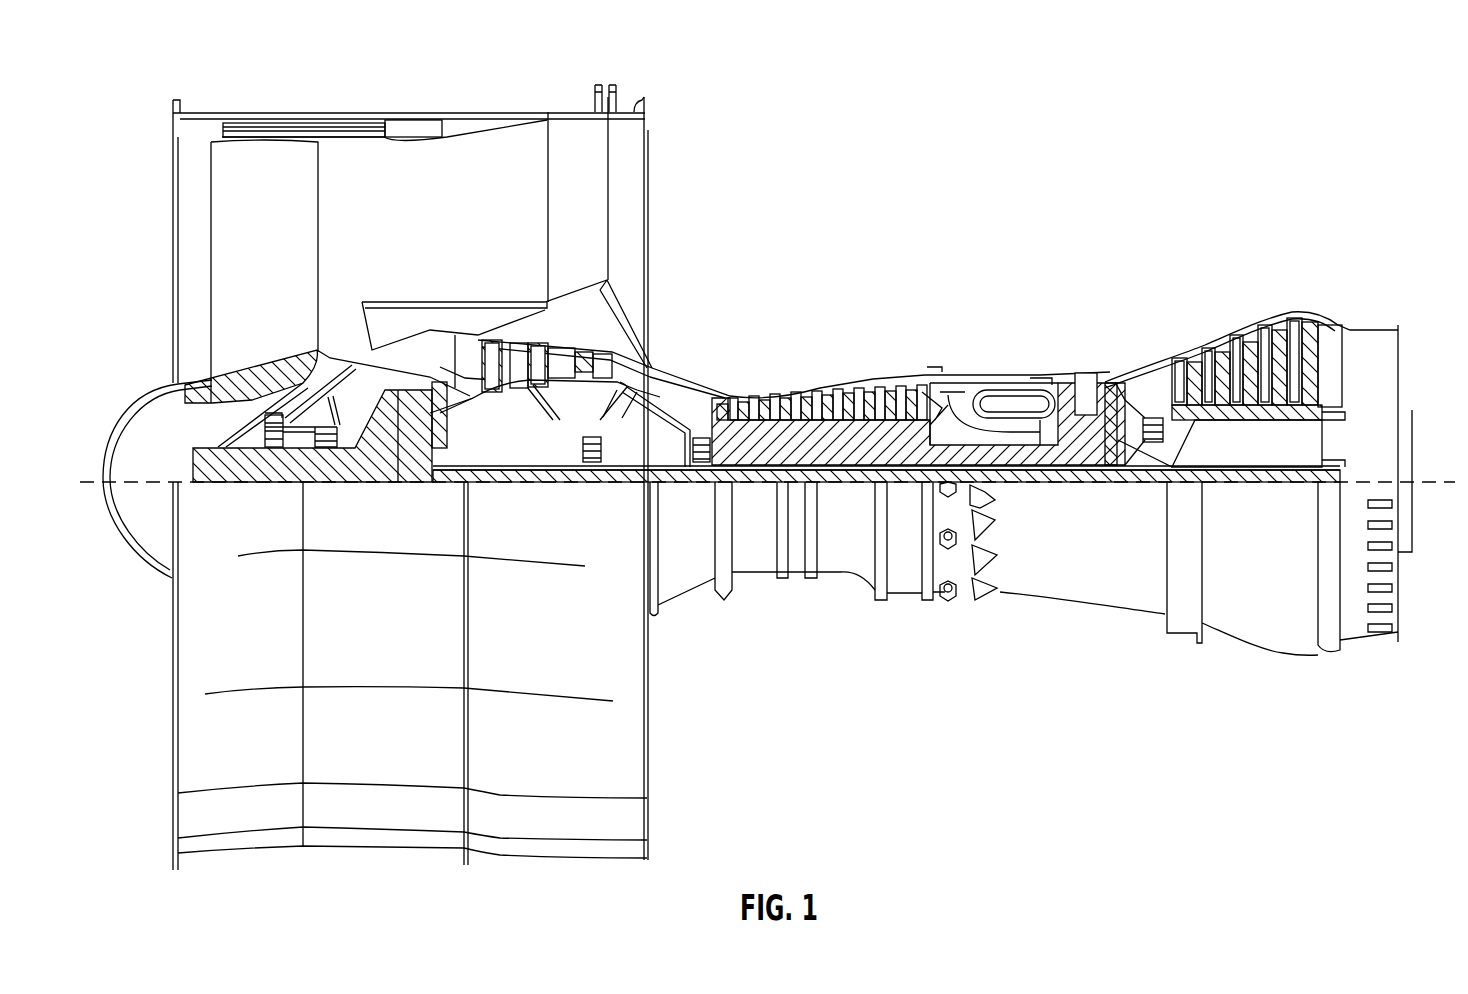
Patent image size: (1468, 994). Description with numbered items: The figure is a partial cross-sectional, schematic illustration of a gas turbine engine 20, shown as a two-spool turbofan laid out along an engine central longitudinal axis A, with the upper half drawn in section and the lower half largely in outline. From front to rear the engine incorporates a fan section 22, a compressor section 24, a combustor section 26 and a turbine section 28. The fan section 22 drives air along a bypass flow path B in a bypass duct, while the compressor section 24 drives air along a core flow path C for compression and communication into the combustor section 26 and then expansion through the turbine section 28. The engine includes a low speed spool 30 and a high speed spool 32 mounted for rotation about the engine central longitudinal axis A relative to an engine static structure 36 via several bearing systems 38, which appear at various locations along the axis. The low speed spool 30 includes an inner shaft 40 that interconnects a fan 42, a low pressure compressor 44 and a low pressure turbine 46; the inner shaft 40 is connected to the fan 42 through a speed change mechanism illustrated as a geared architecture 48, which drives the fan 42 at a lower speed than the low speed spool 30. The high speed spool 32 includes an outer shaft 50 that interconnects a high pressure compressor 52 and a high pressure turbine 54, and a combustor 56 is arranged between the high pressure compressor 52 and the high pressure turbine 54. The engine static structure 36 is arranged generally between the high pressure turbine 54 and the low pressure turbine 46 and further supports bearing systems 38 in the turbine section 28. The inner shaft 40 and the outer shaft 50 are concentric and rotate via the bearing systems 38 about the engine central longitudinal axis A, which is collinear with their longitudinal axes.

The gas turbine engine 20 is at (1218, 148).
The fan section 22 is at (283, 100).
The compressor section 24 is at (836, 342).
The combustor section 26 is at (988, 342).
The turbine section 28 is at (1190, 284).
The low speed spool 30 is at (870, 482).
The high speed spool 32 is at (935, 420).
The engine static structure 36 is at (907, 598).
The bearing systems 38 is at (277, 440).
The inner shaft 40 is at (660, 485).
The fan 42 is at (292, 240).
The low pressure compressor 44 is at (562, 350).
The low pressure turbine 46 is at (1257, 332).
The geared architecture 48 is at (413, 447).
The outer shaft 50 is at (1032, 460).
The high pressure compressor 52 is at (822, 440).
The high pressure turbine 54 is at (1083, 374).
The combustor 56 is at (1010, 400).
The engine central longitudinal axis A is at (1424, 473).
The bypass flow path B is at (500, 210).
The core flow path C is at (368, 342).